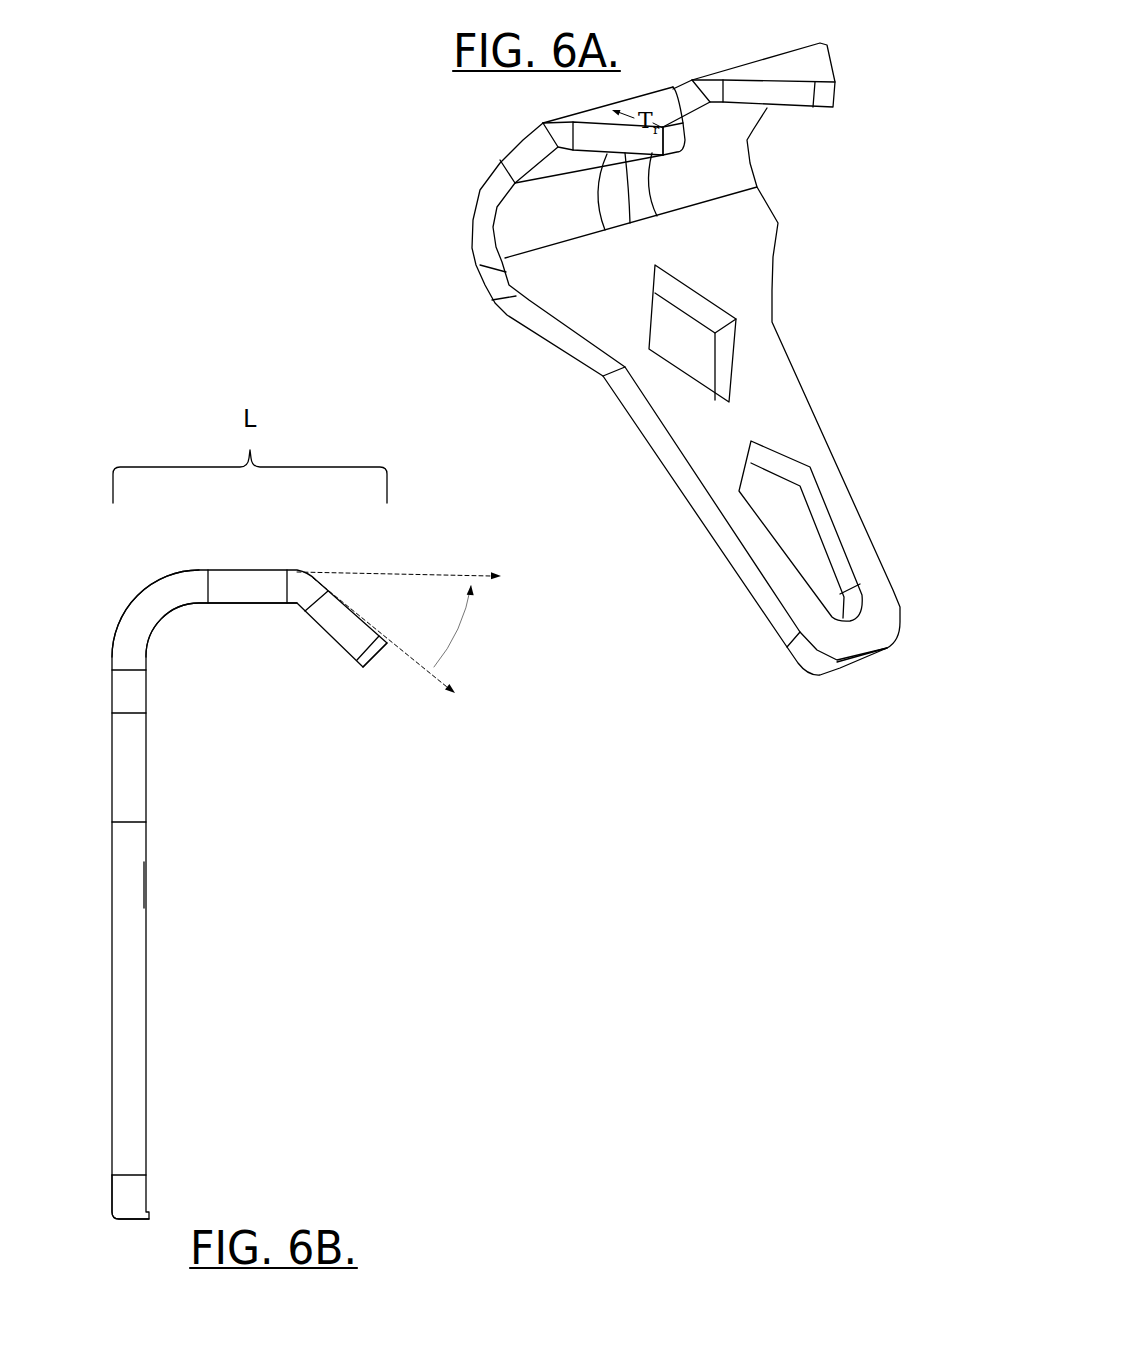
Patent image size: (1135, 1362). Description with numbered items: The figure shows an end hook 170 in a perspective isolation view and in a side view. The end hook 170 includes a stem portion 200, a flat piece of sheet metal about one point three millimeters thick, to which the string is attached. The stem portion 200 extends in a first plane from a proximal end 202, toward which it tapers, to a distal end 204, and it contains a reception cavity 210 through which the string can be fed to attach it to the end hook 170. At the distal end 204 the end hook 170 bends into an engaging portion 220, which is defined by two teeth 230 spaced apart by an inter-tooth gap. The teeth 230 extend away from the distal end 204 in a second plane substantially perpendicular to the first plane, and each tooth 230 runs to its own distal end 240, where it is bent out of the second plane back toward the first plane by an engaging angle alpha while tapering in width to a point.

In FIG. 6A, the end hook 170 is at (421, 104).
In FIG. 6A, the stem portion 200 is at (668, 513).
In FIG. 6B, the stem portion 200 is at (160, 1088).
In FIG. 6B, the proximal end 202 is at (126, 1218).
In FIG. 6B, the distal end 204 is at (127, 653).
In FIG. 6A, the reception cavity 210 is at (815, 520).
In FIG. 6B, the engaging portion 220 is at (247, 669).
In FIG. 6A, the teeth 230 is at (762, 57).
In FIG. 6A, the distal end 240 is at (835, 80).
In FIG. 6B, the distal end 240 is at (373, 647).